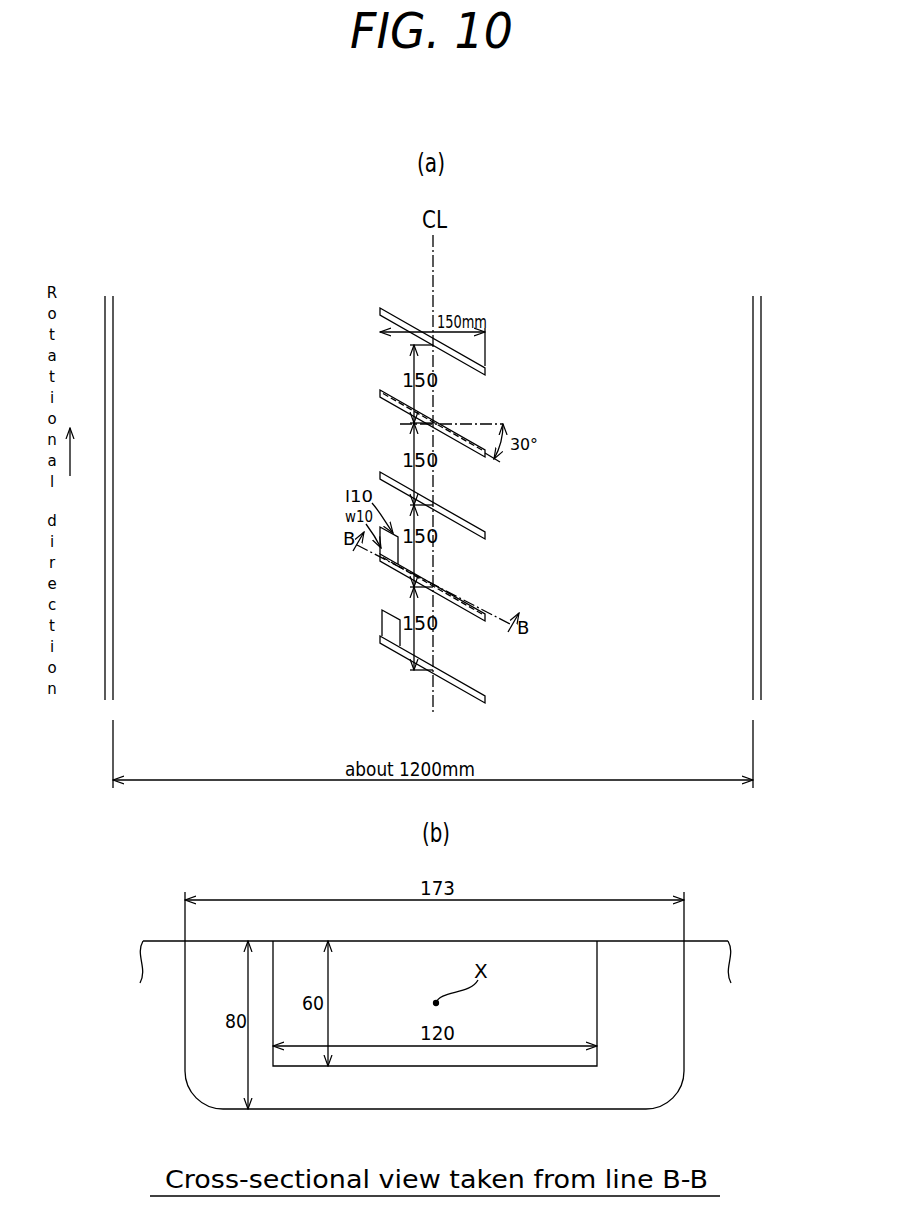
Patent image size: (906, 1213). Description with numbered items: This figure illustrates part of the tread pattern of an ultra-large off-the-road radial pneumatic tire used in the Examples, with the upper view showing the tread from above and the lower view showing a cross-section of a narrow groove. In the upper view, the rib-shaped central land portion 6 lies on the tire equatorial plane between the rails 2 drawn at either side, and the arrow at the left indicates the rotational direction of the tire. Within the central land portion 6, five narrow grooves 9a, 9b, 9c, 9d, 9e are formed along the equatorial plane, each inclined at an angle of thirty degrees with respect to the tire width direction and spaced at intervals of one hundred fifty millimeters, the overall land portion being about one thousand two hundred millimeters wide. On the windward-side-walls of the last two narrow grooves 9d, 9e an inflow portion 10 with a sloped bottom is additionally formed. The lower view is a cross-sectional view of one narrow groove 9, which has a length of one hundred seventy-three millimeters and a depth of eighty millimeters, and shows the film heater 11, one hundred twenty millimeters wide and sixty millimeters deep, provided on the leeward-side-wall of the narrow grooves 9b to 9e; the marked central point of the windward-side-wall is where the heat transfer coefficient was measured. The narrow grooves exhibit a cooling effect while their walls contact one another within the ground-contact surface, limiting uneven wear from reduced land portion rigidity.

The rail 2 is at (108, 296).
The rib-shaped central land portion 6 is at (588, 302).
The narrow groove 9 is at (415, 1090).
The narrow groove 9a is at (478, 373).
The narrow groove 9b is at (478, 456).
The narrow groove 9c is at (478, 538).
The narrow groove 9d is at (478, 620).
The narrow groove 9e is at (478, 703).
The inflow portion 10 is at (384, 630).
The film heater 11 is at (510, 1057).